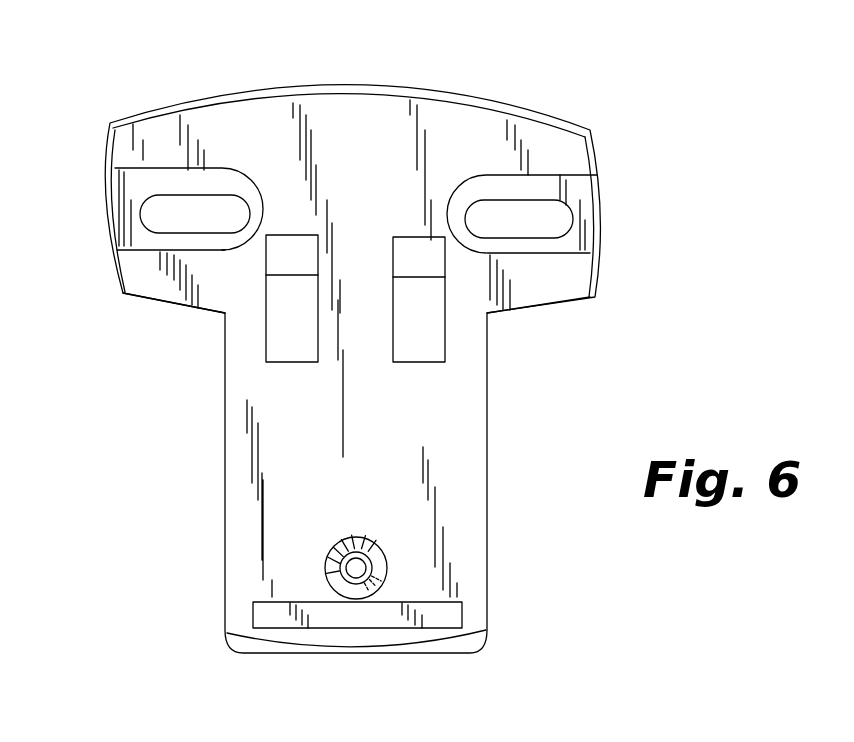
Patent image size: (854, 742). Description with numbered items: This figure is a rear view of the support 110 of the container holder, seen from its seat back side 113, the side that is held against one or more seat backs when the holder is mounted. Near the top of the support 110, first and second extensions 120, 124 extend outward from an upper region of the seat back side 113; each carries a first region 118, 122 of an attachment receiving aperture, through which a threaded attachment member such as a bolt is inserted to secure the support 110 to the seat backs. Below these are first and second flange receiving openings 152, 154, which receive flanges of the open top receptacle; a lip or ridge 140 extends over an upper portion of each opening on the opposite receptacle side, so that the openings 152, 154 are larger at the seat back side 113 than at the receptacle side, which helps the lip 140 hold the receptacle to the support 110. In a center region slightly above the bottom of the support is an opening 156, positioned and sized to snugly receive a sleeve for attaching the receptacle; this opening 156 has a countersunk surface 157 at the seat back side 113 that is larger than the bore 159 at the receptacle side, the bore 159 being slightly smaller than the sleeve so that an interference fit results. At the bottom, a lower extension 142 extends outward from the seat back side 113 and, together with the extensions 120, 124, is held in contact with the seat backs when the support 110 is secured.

The support 110 is at (211, 90).
The seat back side 113 is at (453, 115).
The first region 118 is at (532, 198).
The first extension 120 is at (560, 256).
The first region 122 is at (150, 196).
The second extension 124 is at (148, 252).
The lip or ridge 140 is at (355, 290).
The lower extension 142 is at (450, 625).
The first flange receiving opening 152 is at (400, 363).
The second flange receiving opening 154 is at (273, 363).
The opening or aperture 156 is at (341, 541).
The countersunk surface 157 is at (328, 570).
The bore 159 is at (373, 550).